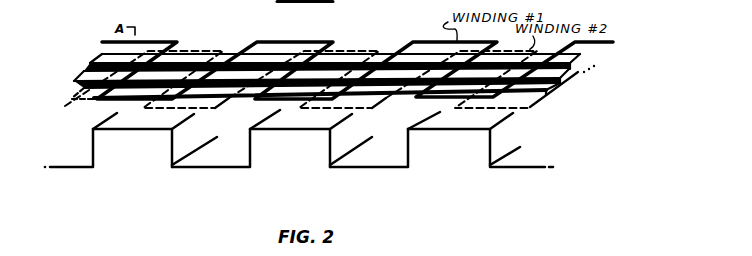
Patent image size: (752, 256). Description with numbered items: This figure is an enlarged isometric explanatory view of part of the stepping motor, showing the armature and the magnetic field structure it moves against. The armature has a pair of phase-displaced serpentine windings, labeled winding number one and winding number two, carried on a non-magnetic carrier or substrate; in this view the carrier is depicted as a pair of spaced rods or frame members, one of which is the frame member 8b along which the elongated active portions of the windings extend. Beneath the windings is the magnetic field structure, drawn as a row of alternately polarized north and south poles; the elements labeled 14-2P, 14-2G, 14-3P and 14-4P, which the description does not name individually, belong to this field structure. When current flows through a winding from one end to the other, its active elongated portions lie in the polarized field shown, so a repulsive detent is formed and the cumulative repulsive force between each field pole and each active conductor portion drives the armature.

The frame member 8b is at (558, 86).
The pole piece 14-2P is at (132, 155).
The pole piece gap section 14-2G is at (285, 158).
The pole piece 14-3P is at (373, 160).
The pole piece 14-4P is at (448, 160).